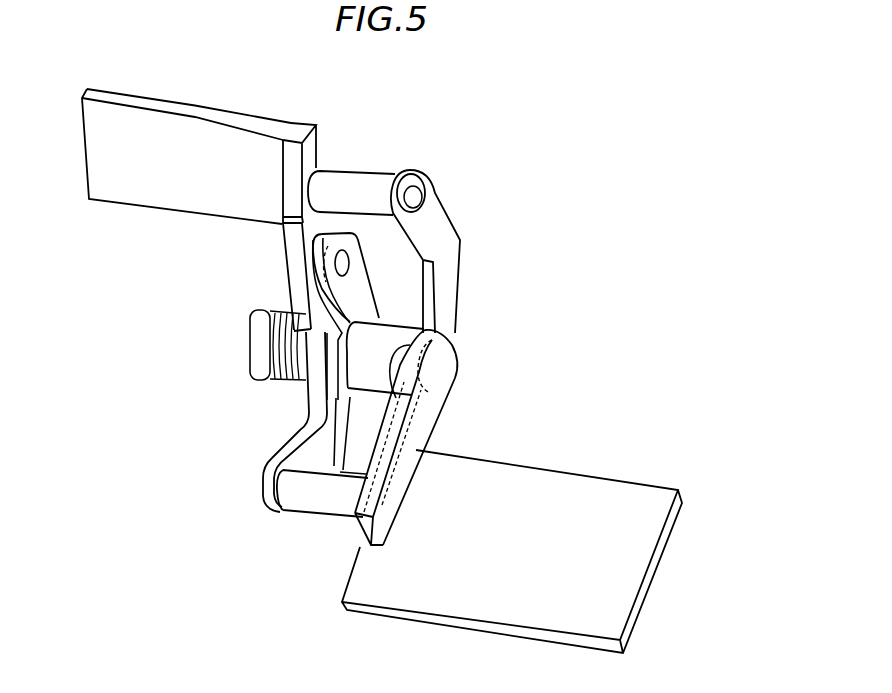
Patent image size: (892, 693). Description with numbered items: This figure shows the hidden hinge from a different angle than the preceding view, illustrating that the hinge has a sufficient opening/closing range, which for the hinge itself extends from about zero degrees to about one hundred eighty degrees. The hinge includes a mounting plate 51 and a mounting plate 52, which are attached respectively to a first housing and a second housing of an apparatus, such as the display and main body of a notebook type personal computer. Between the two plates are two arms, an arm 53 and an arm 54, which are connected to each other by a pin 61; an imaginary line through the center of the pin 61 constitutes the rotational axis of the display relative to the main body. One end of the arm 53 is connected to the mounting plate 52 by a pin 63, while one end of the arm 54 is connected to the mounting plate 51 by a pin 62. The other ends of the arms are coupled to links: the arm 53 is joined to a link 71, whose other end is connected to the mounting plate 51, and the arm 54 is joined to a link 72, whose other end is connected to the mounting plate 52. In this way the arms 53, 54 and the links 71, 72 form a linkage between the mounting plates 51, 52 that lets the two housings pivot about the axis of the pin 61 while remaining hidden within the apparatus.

The mounting plate 51 is at (312, 122).
The mounting plate 52 is at (357, 537).
The arm 53 is at (333, 453).
The arm 54 is at (443, 245).
The pin 61 is at (458, 360).
The pin 62 is at (426, 194).
The pin 63 is at (290, 500).
The link 71 is at (292, 273).
The link 72 is at (420, 415).